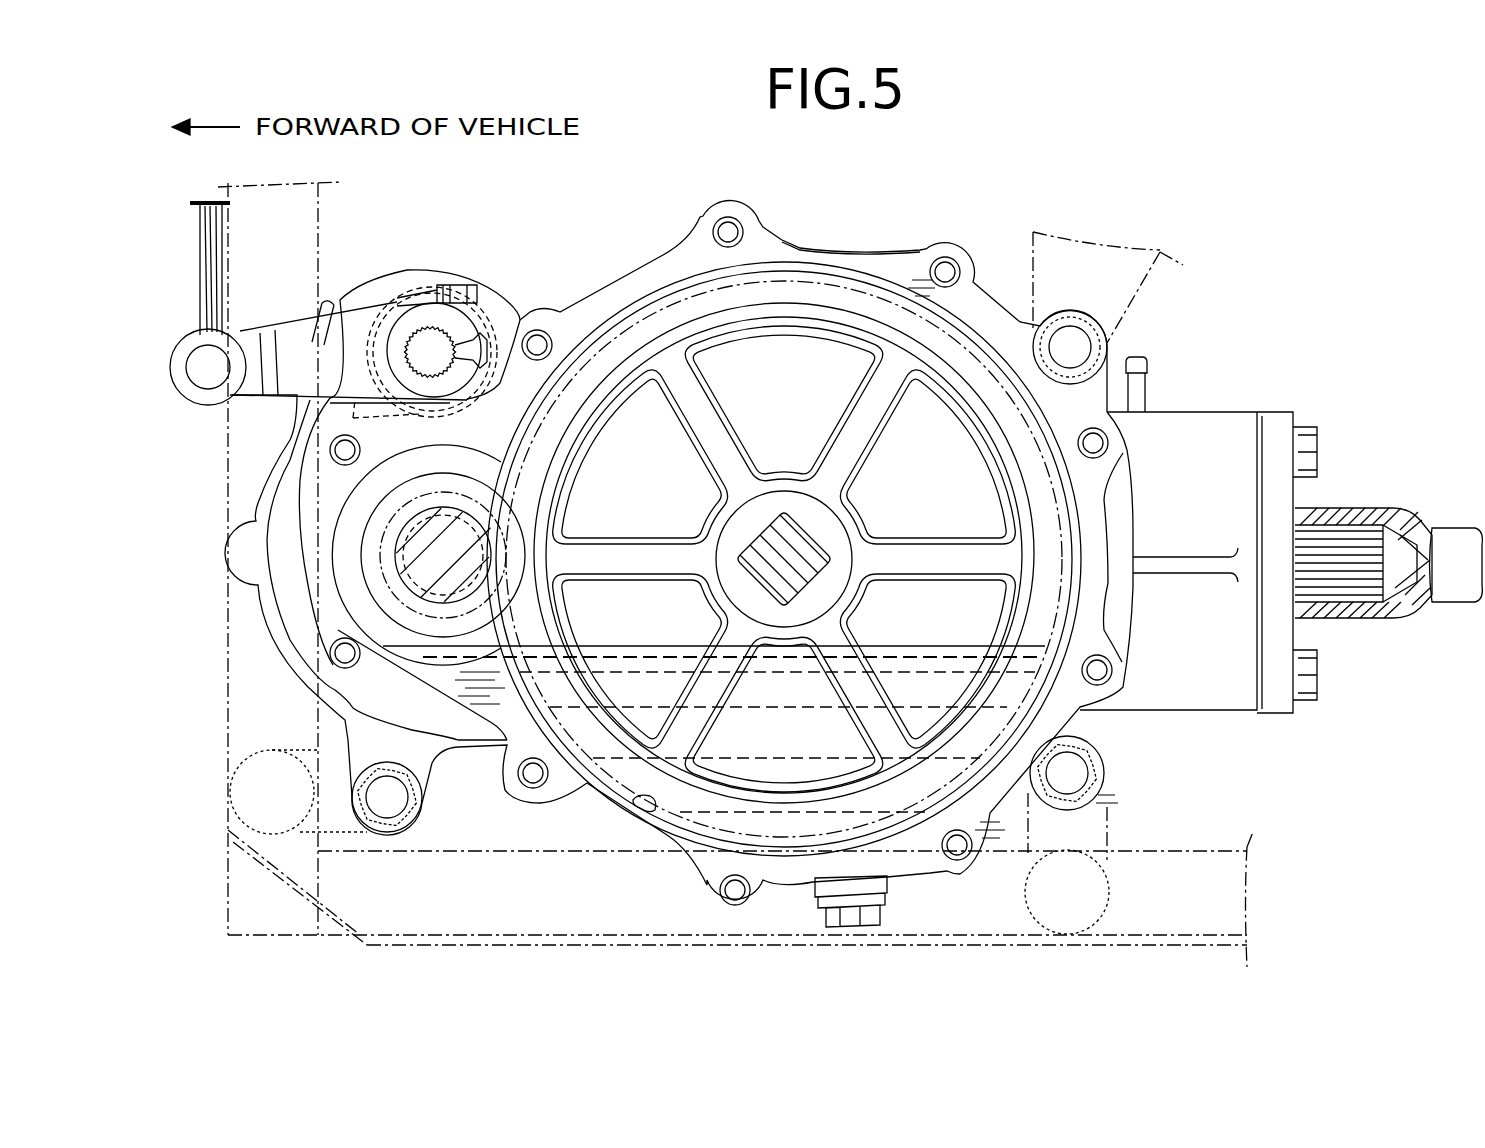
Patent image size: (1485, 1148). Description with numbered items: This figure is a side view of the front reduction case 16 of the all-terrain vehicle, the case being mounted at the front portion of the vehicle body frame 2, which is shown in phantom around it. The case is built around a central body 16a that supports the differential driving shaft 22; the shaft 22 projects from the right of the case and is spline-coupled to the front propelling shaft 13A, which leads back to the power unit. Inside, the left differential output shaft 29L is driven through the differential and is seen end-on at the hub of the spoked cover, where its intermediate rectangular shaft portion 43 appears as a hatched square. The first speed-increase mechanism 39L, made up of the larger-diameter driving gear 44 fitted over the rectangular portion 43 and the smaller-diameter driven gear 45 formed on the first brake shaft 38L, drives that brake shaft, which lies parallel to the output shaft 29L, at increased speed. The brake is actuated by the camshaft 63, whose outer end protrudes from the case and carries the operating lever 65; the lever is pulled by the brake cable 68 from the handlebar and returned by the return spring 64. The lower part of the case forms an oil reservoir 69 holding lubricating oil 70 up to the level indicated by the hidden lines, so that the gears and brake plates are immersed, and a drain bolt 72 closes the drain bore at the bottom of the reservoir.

The vehicle body frame 2 is at (1150, 872).
The front propelling shaft 13A is at (1450, 543).
The front reduction case 16 is at (788, 225).
The central body 16a is at (860, 256).
The differential driving shaft 22 is at (1333, 557).
The left differential output shaft 29L is at (816, 537).
The first brake shaft 38L is at (448, 543).
The first speed-increase mechanism 39L is at (477, 775).
The intermediate rectangular shaft portion 43 is at (793, 563).
The larger-diameter driving gear 44 is at (603, 777).
The smaller-diameter driven gear 45 is at (462, 622).
The camshaft 63 is at (424, 343).
The return spring 64 is at (367, 325).
The operating lever 65 is at (293, 343).
The brake cable 68 is at (217, 262).
The oil reservoir 69 is at (655, 812).
The lubricating oil 70 is at (895, 645).
The drain bolt 72 is at (853, 910).